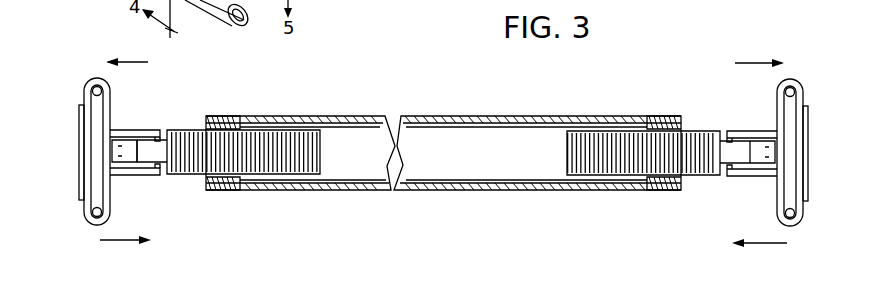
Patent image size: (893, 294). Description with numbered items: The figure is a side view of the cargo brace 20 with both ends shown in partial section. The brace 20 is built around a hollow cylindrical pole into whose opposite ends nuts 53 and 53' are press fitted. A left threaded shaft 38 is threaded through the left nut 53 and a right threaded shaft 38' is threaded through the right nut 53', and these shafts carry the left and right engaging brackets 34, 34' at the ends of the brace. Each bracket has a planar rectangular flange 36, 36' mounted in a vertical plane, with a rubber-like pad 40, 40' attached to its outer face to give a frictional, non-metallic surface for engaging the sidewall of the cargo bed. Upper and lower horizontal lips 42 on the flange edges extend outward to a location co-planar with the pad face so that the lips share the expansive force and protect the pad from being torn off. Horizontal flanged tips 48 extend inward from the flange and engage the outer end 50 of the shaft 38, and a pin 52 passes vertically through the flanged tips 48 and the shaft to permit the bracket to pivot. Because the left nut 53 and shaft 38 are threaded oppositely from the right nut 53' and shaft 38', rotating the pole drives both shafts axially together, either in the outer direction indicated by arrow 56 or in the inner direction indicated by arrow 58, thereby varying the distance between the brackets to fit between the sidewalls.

The cargo brace 20 is at (479, 110).
The left engaging bracket 34 is at (78, 140).
The right engaging bracket 34' is at (757, 152).
The flange 36 is at (128, 188).
The right flange 36' is at (749, 194).
The left threaded shaft 38 is at (243, 133).
The right threaded shaft 38' is at (656, 138).
The pad 40 is at (123, 109).
The right pad 40' is at (754, 168).
The horizontal lips 42 is at (85, 97).
The flanged tips 48 is at (158, 132).
The outer end of shaft 50 is at (118, 140).
The pin 52 is at (143, 133).
The left nut 53 is at (236, 169).
The right nut 53' is at (649, 136).
The first outer direction arrow 56 is at (131, 62).
The second inner direction arrow 58 is at (118, 241).